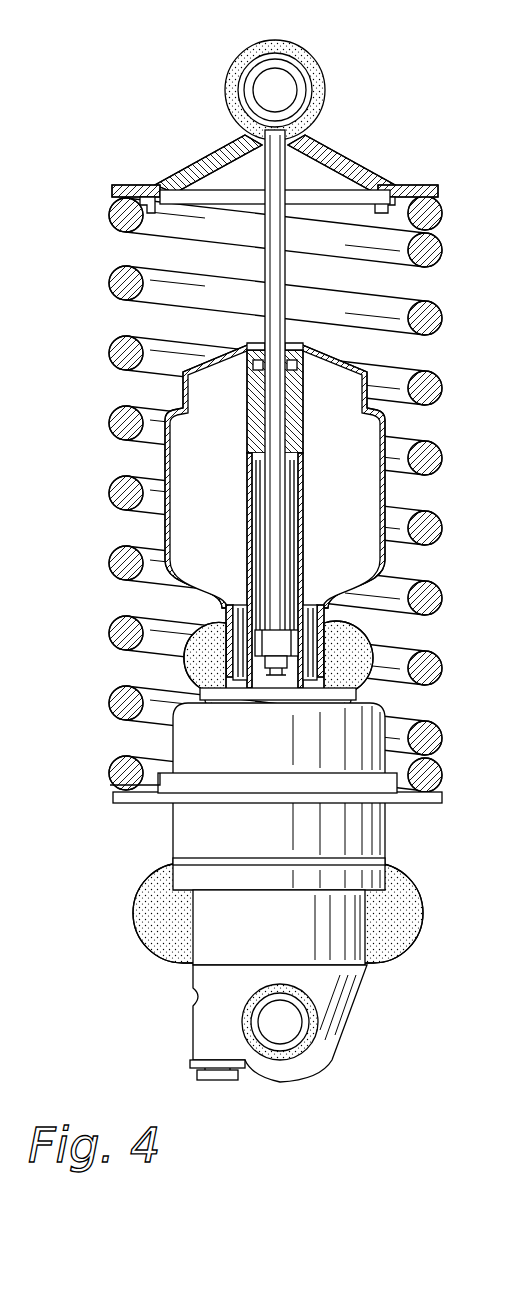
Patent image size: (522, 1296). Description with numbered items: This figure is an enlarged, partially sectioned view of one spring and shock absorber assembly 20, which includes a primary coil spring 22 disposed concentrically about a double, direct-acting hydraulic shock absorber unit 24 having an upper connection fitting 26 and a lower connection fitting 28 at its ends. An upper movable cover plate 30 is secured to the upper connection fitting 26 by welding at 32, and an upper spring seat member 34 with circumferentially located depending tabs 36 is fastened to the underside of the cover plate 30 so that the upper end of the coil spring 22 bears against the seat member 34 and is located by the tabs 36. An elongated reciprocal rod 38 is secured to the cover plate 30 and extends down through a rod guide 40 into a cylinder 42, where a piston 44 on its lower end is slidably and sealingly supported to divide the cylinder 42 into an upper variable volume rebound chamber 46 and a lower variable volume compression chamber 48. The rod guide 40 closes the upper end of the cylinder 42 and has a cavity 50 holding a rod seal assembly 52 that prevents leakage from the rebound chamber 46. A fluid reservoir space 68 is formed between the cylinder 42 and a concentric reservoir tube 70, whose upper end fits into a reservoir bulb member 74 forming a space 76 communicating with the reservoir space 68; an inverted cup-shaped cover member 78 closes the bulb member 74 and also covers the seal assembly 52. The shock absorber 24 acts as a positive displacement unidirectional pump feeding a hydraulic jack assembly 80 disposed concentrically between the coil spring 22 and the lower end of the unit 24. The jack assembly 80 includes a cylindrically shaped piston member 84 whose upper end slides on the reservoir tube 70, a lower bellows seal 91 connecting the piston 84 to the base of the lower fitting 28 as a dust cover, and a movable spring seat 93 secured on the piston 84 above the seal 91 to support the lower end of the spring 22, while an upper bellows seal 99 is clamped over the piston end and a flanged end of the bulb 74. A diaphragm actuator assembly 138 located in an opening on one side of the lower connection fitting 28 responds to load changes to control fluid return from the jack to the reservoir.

The assembly 20 is at (110, 283).
The primary coil spring 22 is at (118, 355).
The shock absorber unit 24 is at (395, 493).
The upper connection fitting 26 is at (313, 72).
The lower connection fitting 28 is at (308, 1060).
The upper movable cover plate 30 is at (337, 163).
The welding 32 is at (243, 133).
The upper spring seat member 34 is at (427, 185).
The depending tabs 36 is at (150, 215).
The reciprocal rod 38 is at (265, 263).
The rod guide 40 is at (307, 428).
The cylinder 42 is at (310, 495).
The piston 44 is at (258, 645).
The rebound chamber 46 is at (250, 488).
The compression chamber 48 is at (296, 660).
The cavity 50 is at (244, 373).
The rod seal assembly 52 is at (250, 346).
The fluid reservoir space 68 is at (312, 606).
The reservoir tube 70 is at (232, 605).
The reservoir bulb member 74 is at (160, 532).
The space 76 is at (345, 536).
The cover member 78 is at (340, 365).
The hydraulic jack assembly 80 is at (173, 820).
The piston member 84 is at (173, 845).
The bellows seal 91 is at (420, 945).
The movable spring seat 93 is at (435, 803).
The bellows seal 99 is at (360, 633).
The diaphragm actuator assembly 138 is at (232, 1082).